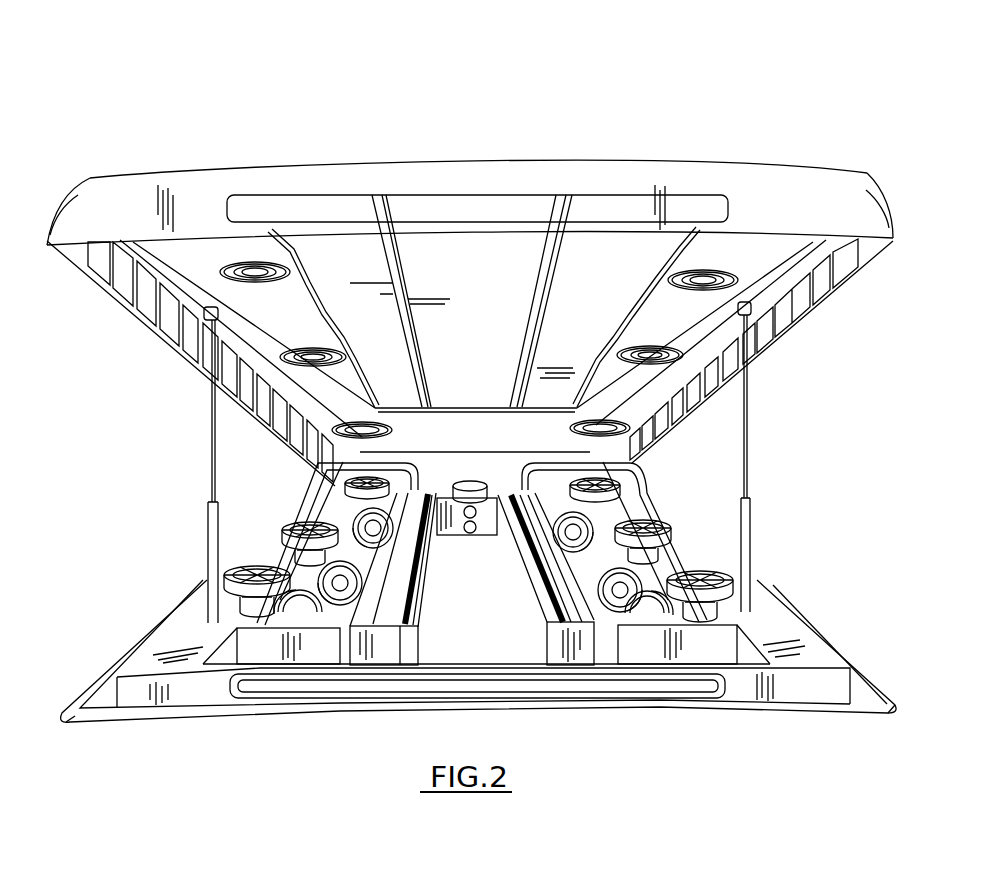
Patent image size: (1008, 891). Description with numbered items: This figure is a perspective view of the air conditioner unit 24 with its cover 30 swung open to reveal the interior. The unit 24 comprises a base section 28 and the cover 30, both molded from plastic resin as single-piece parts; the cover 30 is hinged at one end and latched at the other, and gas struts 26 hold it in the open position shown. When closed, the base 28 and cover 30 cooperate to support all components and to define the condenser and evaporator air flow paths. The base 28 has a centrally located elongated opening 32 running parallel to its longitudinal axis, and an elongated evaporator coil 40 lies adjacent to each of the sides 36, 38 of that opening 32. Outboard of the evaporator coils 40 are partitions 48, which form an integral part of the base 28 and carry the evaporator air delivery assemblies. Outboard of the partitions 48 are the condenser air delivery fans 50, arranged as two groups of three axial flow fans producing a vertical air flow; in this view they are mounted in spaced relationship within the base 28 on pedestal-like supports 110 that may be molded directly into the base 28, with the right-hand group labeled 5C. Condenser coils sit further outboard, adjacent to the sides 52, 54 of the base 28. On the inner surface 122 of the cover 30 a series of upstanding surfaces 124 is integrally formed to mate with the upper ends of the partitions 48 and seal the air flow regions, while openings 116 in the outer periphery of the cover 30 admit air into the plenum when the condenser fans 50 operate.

The unit 24 is at (586, 76).
The cover 30 is at (230, 165).
The openings 116 is at (428, 205).
The inner surface 122 is at (495, 266).
The upstanding surfaces 124 is at (412, 350).
The gas struts 26 is at (210, 527).
The base section 28 is at (97, 693).
The side of the base 52 is at (60, 713).
The side of the base 54 is at (862, 672).
The elongated opening 32 is at (490, 621).
The evaporator coil 40 is at (390, 657).
The side of the elongated opening 36 is at (420, 650).
The side of the elongated opening 38 is at (512, 565).
The condenser air delivery fans 50 is at (308, 527).
The right pick-up head assembly 5C is at (620, 537).
The pedestal like supports 110 is at (230, 588).
The partition 48 is at (287, 617).